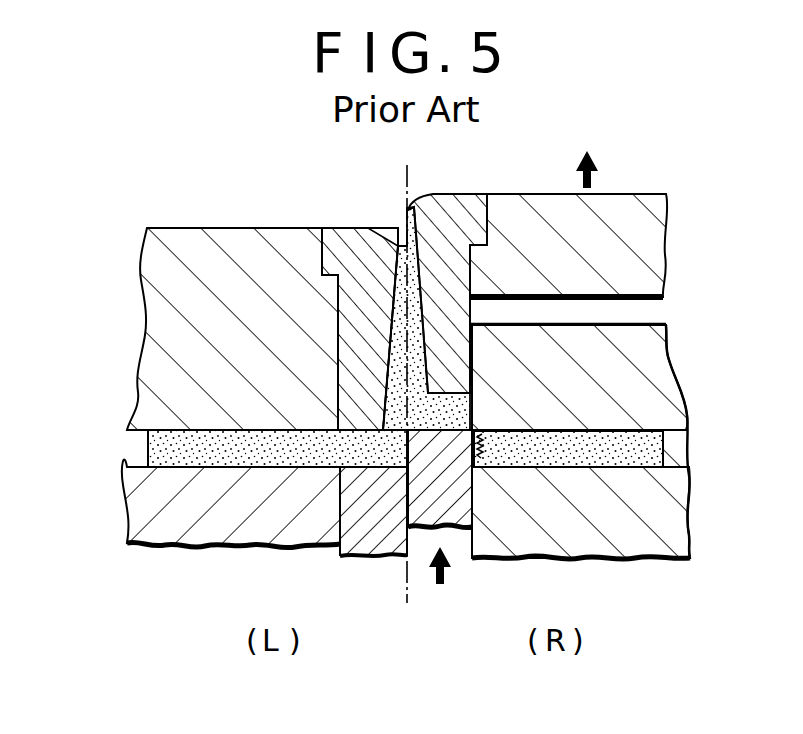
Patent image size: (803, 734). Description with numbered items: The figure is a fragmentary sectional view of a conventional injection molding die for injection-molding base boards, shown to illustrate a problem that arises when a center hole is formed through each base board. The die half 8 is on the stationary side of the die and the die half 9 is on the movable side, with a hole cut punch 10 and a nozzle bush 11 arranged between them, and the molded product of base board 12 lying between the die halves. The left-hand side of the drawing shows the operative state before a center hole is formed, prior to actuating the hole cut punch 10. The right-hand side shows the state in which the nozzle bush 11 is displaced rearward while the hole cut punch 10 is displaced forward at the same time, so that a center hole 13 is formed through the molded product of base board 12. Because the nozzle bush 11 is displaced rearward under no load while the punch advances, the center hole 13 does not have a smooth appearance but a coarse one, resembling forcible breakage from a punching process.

The die half on the stationary side 8 is at (221, 237).
The die half on the movable side 9 is at (197, 503).
The hole cut punch 10 is at (377, 533).
The nozzle bush 11 is at (360, 237).
The molded product of base board 12 is at (158, 452).
The center hole 13 is at (474, 449).